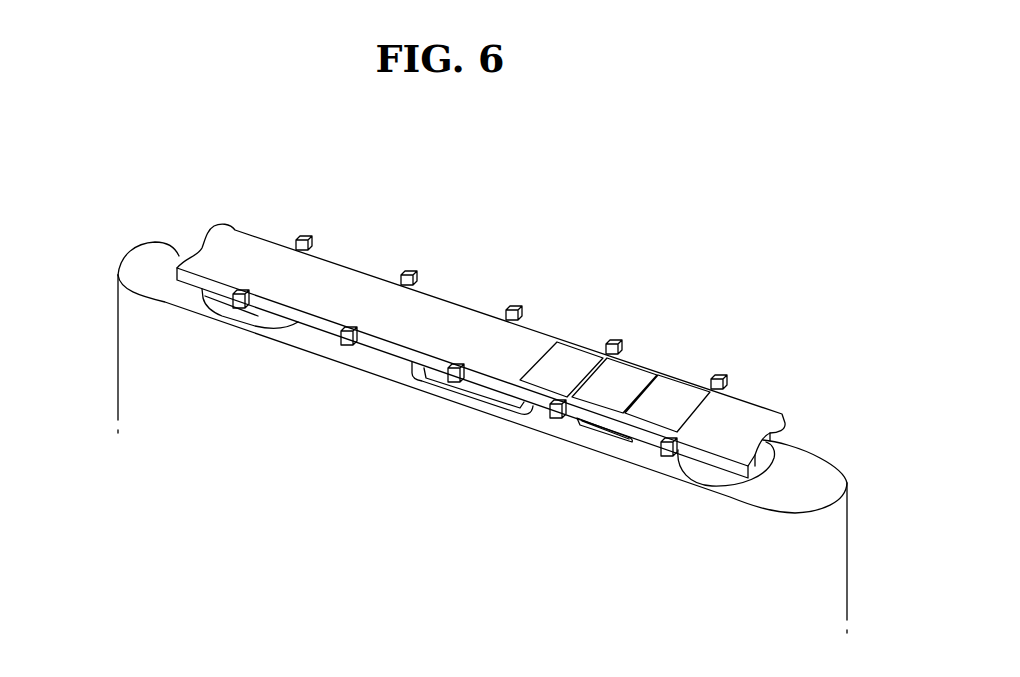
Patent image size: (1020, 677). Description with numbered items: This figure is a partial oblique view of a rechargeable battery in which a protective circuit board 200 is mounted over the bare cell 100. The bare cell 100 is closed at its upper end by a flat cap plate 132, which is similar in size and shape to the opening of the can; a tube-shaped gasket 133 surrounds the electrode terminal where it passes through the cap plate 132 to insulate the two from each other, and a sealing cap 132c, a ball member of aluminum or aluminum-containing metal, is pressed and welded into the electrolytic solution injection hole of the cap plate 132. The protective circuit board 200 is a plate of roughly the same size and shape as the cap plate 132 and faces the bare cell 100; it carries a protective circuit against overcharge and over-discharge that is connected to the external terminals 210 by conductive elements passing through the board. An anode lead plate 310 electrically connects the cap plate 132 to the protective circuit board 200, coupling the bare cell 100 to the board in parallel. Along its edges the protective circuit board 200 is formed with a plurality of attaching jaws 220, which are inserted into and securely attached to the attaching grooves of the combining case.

The bare cell 100 is at (158, 357).
The cap plate 132 is at (137, 270).
The sealing cap 132c is at (703, 475).
The gasket 133 is at (480, 390).
The protective circuit board 200 is at (252, 240).
The external terminals 210 is at (575, 362).
The attaching jaws 220 is at (507, 310).
The anode lead plate 310 is at (602, 432).